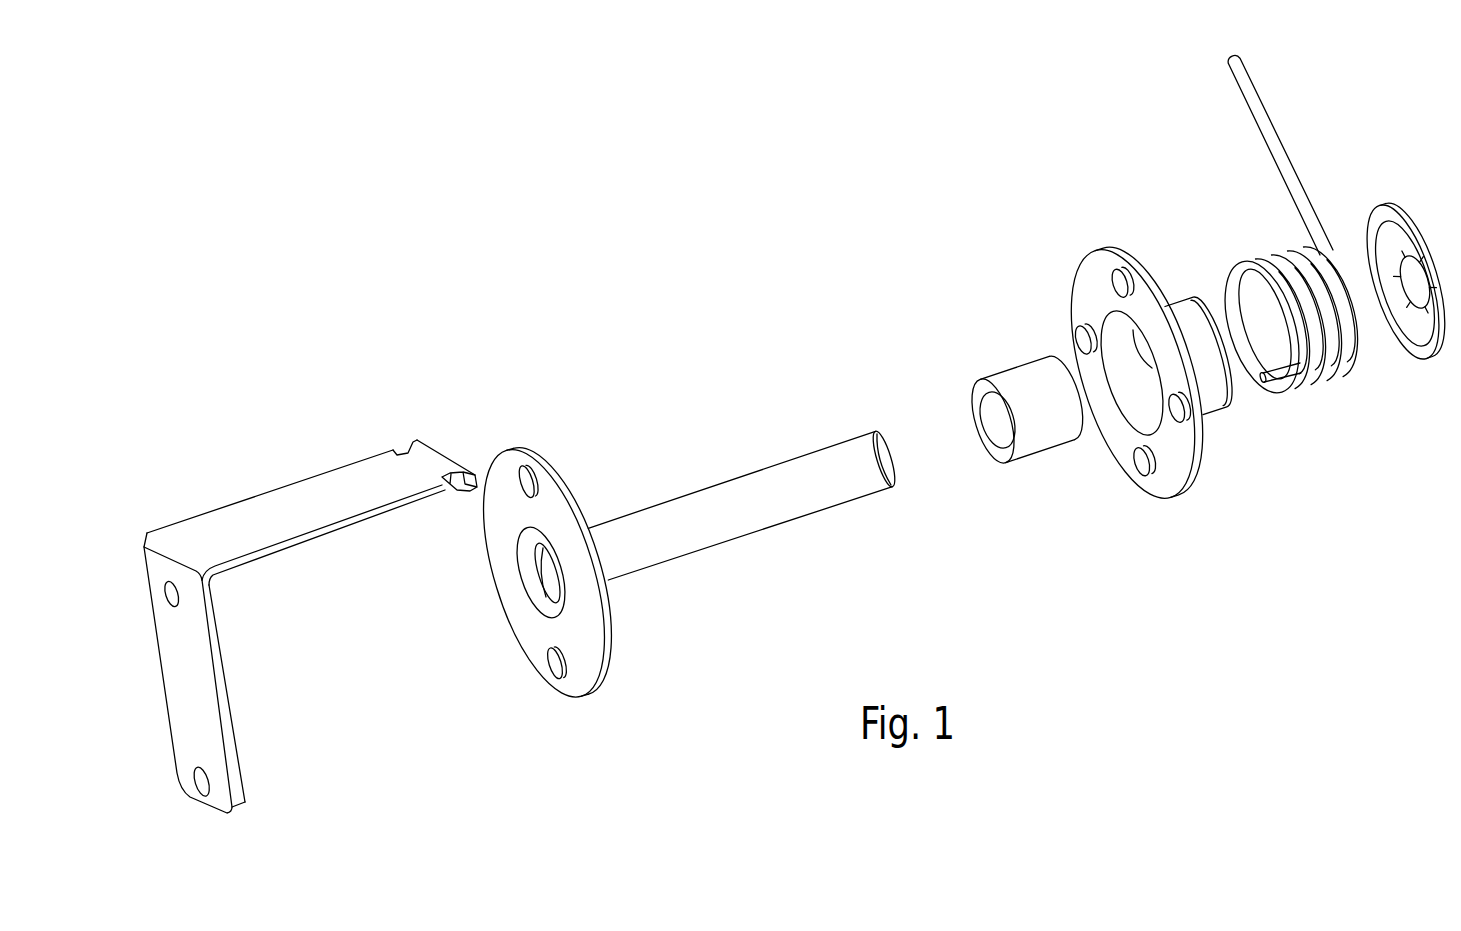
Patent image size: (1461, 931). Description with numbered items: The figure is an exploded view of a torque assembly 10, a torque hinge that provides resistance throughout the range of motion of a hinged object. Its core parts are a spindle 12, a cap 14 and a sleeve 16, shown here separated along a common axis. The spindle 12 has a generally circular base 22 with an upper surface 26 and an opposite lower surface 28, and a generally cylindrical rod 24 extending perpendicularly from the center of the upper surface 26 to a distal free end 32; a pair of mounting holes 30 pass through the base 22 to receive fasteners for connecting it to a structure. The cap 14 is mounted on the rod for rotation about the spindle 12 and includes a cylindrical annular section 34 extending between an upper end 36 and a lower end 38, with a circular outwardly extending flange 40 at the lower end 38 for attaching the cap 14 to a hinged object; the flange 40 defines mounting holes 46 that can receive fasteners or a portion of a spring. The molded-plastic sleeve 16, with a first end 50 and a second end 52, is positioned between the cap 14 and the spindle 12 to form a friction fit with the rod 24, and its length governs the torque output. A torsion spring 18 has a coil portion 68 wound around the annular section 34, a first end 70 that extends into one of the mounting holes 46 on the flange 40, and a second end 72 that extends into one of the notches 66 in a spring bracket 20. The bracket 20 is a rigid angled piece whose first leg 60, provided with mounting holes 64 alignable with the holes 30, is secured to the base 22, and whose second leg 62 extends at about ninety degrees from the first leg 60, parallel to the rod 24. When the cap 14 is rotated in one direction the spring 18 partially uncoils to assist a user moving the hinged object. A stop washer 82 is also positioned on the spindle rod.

The torque assembly 10 is at (456, 213).
The spindle 12 is at (677, 552).
The cap 14 is at (1133, 372).
The sleeve 16 is at (1012, 418).
The torsion spring 18 is at (1280, 257).
The spring bracket 20 is at (310, 506).
The base 22 is at (568, 574).
The rod 24 is at (718, 540).
The upper surface 26 is at (610, 650).
The lower surface 28 is at (507, 610).
The mounting holes 30 is at (532, 480).
The distal free end 32 is at (887, 432).
The annular section 34 is at (1180, 300).
The upper end 36 is at (1233, 390).
The lower end 38 is at (1087, 290).
The outwardly extending flange 40 is at (1088, 258).
The mounting holes 46 is at (1145, 467).
The first end 50 is at (982, 387).
The second end 52 is at (1068, 350).
The first leg 60 is at (228, 691).
The second leg 62 is at (333, 512).
The mounting holes 64 is at (205, 788).
The notches 66 is at (407, 452).
The coil portion 68 is at (1342, 370).
The first end 70 is at (1282, 373).
The second end 72 is at (1258, 122).
The stop washer 82 is at (1415, 348).